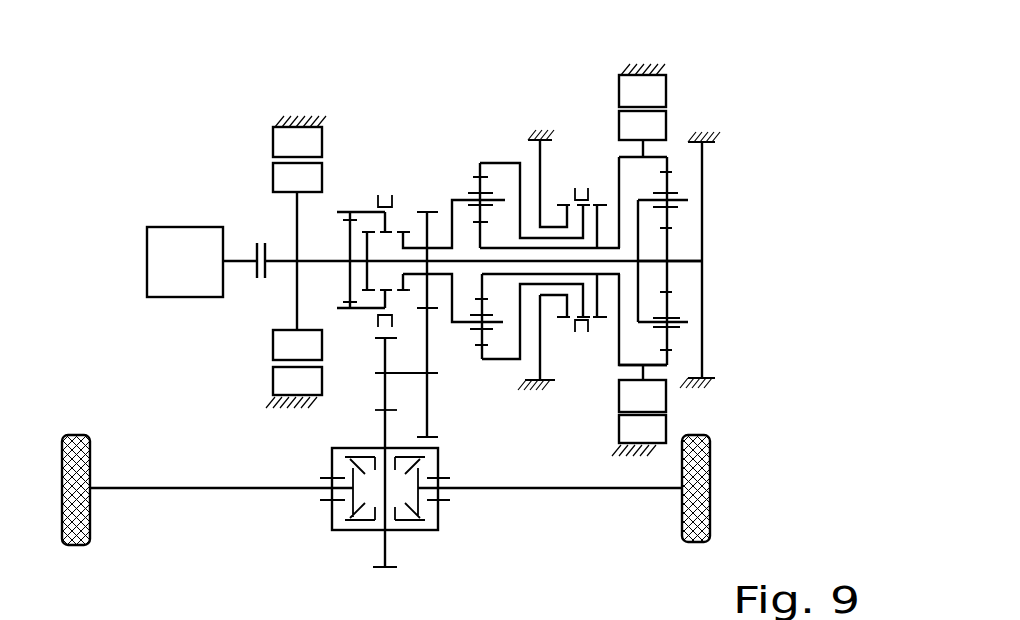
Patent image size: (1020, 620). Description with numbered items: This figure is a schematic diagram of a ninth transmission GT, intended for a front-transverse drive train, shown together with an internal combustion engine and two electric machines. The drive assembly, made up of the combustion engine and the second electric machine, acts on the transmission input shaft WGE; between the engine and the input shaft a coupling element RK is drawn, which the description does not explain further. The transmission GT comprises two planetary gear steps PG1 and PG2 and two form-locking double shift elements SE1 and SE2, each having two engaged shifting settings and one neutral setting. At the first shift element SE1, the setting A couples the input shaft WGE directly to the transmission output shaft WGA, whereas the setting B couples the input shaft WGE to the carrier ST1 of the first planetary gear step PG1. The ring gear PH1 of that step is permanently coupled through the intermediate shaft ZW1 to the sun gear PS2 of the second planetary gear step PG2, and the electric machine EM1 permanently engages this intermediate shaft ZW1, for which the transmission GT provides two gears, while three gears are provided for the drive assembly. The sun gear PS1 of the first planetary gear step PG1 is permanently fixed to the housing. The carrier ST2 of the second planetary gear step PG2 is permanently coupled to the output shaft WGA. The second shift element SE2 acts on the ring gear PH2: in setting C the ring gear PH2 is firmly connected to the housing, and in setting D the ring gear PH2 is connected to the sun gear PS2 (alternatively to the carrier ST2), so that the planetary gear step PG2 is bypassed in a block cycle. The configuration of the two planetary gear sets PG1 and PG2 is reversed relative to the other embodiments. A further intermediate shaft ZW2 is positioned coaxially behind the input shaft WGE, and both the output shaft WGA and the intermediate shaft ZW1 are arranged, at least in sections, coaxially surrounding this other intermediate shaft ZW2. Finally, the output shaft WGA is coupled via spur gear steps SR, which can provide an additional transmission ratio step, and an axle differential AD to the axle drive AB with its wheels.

The friction clutch / damper RK is at (258, 243).
The transmission input shaft WGE is at (283, 263).
The first shift element SE1 is at (380, 163).
The first shifting setting of the first shift element A is at (393, 240).
The second shifting setting of the first shift element B is at (377, 180).
The transmission output shaft WGA is at (445, 248).
The other intermediate shaft ZW2 is at (465, 262).
The spur gear steps SR is at (364, 399).
The axle differential AD is at (355, 532).
The axle drive AB is at (710, 505).
The second planetary gear step PG2 is at (477, 154).
The sun gear of the second planetary gear step PS2 is at (483, 248).
The ring gear of the second planetary gear step PH2 is at (502, 329).
The carrier of the second planetary gear step ST2 is at (497, 322).
The second shift element SE2 is at (581, 153).
The first shifting setting of the second shift element C is at (573, 173).
The second shifting setting of the second shift element D is at (590, 239).
The intermediate shaft ZW1 is at (612, 274).
The electric machine EM1 is at (646, 52).
The first planetary gear step PG1 is at (676, 147).
The carrier of the first planetary gear step ST1 is at (688, 200).
The sun gear of the first planetary gear step PS1 is at (687, 262).
The ring gear of the first planetary gear step PH1 is at (667, 365).
The transmission GT is at (716, 407).